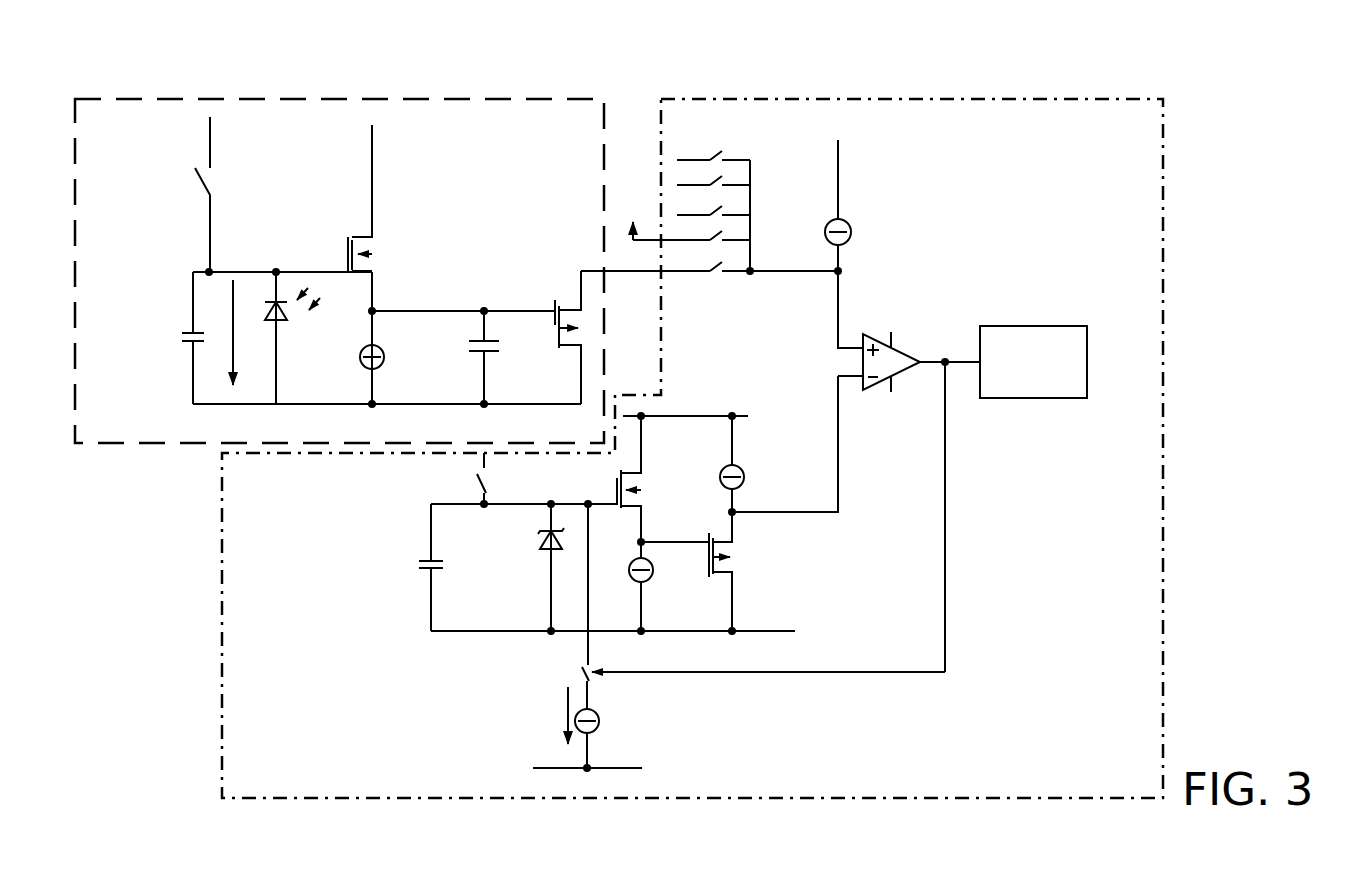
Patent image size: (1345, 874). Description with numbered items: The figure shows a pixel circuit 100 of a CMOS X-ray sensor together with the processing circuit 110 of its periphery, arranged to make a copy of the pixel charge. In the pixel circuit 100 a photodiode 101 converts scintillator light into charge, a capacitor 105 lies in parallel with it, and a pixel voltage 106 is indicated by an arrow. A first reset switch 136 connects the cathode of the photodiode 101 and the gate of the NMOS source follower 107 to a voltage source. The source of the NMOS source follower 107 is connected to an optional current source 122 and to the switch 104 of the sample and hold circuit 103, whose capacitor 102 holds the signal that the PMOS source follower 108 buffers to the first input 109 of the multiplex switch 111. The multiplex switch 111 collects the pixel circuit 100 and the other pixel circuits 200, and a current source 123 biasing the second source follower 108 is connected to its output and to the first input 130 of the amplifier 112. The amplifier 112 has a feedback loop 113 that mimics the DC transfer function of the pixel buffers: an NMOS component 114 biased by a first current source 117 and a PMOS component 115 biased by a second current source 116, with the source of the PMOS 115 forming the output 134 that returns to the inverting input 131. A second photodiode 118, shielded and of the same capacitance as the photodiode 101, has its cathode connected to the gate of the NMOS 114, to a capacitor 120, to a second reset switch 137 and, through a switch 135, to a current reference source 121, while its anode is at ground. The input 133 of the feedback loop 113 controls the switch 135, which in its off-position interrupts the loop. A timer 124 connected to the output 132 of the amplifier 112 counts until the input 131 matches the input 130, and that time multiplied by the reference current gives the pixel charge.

The pixel circuit 100 is at (432, 86).
The processing circuit 110 is at (997, 88).
The photodiode 101 is at (285, 303).
The capacitor 102 is at (490, 355).
The sample and hold circuit 103 is at (450, 292).
The switch 104 is at (435, 302).
The capacitor 105 is at (181, 333).
The pixel voltage 106 is at (237, 293).
The NMOS source follower 107 is at (348, 225).
The PMOS source follower 108 is at (563, 295).
The first input 109 is at (690, 274).
The multiplex switch 111 is at (757, 193).
The amplifier 112 is at (905, 345).
The feedback loop 113 is at (952, 680).
The NMOS component 114 is at (645, 478).
The PMOS component 115 is at (745, 543).
The second current source 116 is at (745, 478).
The first current source 117 is at (650, 575).
The second photodiode 118 is at (543, 536).
The capacitor 120 is at (415, 552).
The current reference source 121 is at (600, 718).
The current source 122 is at (362, 362).
The current source 123 is at (853, 237).
The timer 124 is at (1040, 326).
The first input 130 is at (848, 345).
The inverting input 131 is at (860, 378).
The output 132 is at (925, 365).
The input 133 is at (947, 518).
The output 134 is at (835, 425).
The switch 135 is at (582, 667).
The first reset switch 136 is at (183, 197).
The second reset switch 137 is at (508, 474).
The pixel circuits 200 is at (632, 209).